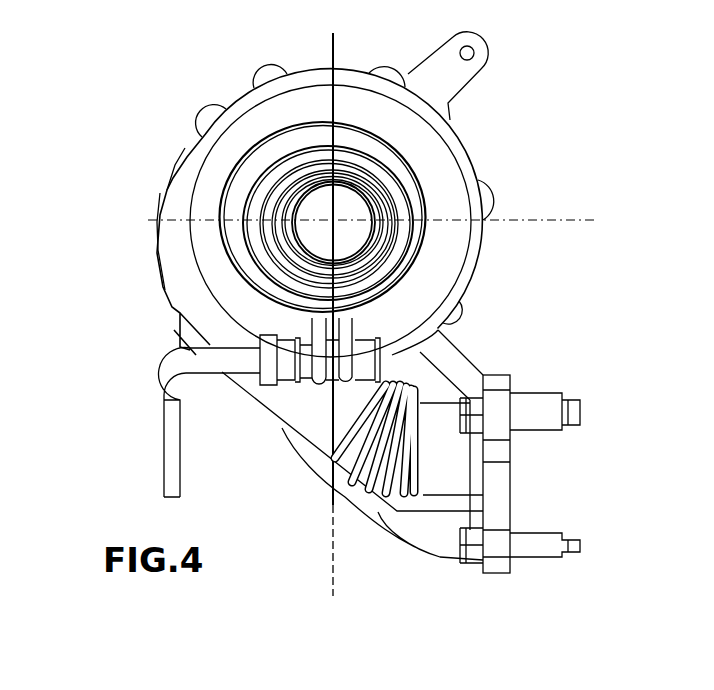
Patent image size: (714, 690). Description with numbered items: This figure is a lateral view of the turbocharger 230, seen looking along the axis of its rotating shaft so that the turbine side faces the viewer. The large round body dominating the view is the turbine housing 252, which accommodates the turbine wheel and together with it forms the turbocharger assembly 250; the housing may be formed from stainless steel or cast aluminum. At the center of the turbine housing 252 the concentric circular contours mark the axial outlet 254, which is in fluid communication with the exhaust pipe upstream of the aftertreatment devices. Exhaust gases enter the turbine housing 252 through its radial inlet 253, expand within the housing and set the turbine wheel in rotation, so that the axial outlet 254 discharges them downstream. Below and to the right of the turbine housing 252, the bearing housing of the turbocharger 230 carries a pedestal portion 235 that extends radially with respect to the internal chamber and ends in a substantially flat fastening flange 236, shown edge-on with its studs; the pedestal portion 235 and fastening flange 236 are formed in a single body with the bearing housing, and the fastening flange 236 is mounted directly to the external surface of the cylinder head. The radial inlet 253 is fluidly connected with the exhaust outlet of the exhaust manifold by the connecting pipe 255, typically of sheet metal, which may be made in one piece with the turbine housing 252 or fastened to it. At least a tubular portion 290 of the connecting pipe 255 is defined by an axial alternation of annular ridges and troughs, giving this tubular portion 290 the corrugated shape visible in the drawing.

The turbocharger 230 is at (160, 110).
The turbine housing 252 is at (270, 126).
The radial inlet 253 is at (431, 60).
The axial outlet 254 is at (362, 204).
The turbocharger assembly 250 is at (188, 292).
The pedestal portion 235 is at (460, 370).
The fastening flange 236 is at (498, 482).
The connecting pipe 255 is at (453, 468).
The tubular portion 290 is at (354, 474).